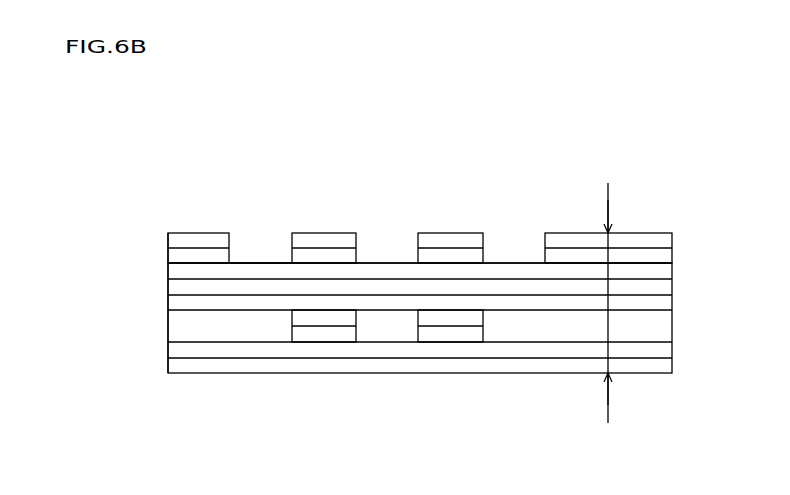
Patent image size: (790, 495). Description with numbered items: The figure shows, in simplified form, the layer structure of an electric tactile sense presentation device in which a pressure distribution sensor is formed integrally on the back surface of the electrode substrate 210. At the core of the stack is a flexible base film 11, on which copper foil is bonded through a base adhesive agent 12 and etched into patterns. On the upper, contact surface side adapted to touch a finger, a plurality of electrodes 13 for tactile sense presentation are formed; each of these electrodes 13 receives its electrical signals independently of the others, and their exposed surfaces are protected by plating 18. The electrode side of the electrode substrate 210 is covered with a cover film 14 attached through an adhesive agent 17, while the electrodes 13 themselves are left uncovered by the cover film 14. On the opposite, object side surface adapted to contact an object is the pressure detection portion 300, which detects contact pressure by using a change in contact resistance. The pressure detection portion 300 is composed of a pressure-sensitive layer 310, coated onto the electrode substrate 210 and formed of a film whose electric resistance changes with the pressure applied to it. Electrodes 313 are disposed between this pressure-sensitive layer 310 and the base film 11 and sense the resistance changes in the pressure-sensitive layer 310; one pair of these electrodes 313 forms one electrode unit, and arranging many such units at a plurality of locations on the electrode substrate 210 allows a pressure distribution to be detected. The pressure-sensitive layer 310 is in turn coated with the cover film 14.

The pressure detection portion 300 is at (255, 377).
The electrode substrate 210 is at (392, 200).
The base adhesive agent 12 is at (175, 275).
The base film 11 is at (167, 290).
The pressure-sensitive layer 310 is at (190, 348).
The cover film 14 is at (203, 242).
The plating 18 is at (318, 240).
The adhesive agent 17 is at (167, 255).
The electrodes 13 is at (290, 258).
The electrodes 313 is at (322, 318).